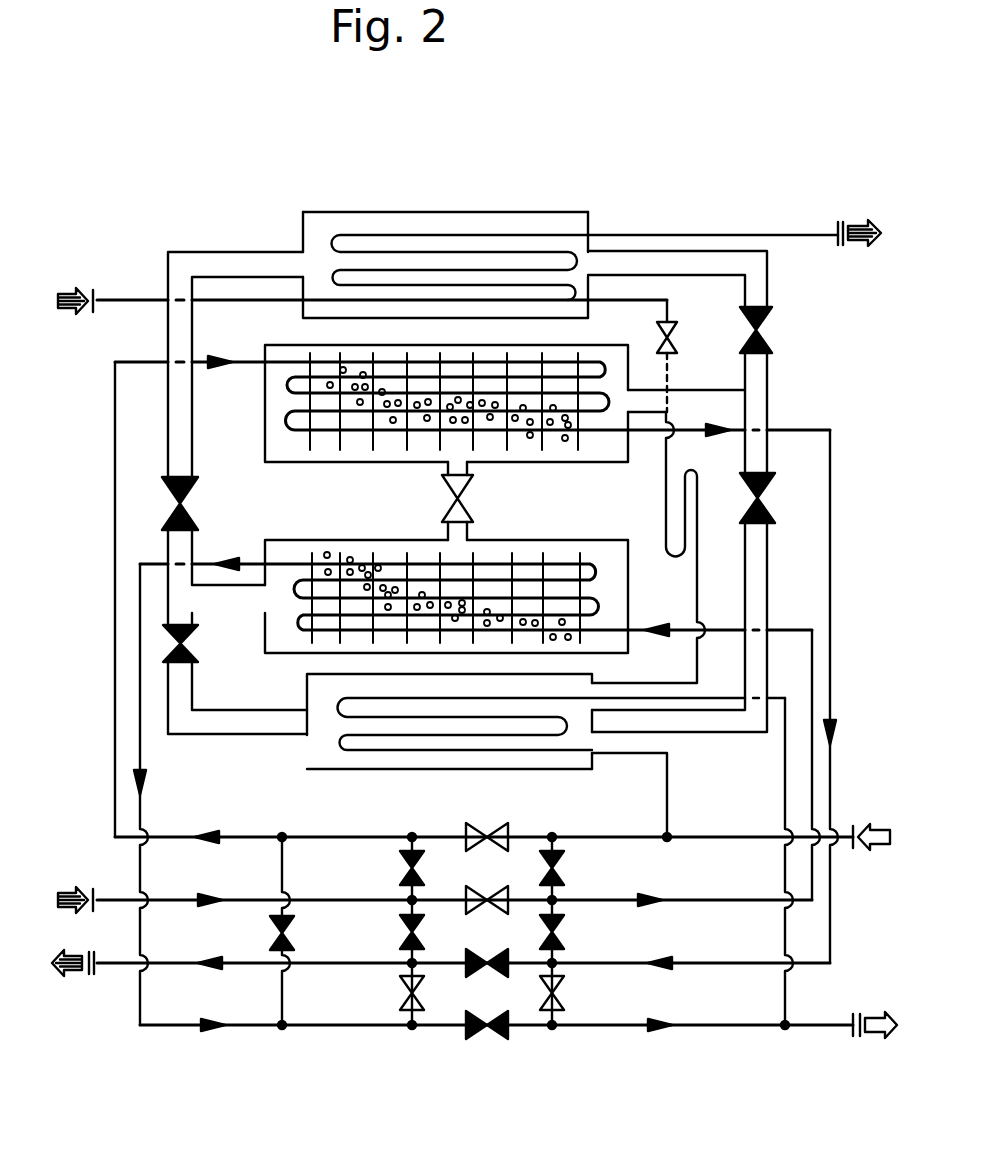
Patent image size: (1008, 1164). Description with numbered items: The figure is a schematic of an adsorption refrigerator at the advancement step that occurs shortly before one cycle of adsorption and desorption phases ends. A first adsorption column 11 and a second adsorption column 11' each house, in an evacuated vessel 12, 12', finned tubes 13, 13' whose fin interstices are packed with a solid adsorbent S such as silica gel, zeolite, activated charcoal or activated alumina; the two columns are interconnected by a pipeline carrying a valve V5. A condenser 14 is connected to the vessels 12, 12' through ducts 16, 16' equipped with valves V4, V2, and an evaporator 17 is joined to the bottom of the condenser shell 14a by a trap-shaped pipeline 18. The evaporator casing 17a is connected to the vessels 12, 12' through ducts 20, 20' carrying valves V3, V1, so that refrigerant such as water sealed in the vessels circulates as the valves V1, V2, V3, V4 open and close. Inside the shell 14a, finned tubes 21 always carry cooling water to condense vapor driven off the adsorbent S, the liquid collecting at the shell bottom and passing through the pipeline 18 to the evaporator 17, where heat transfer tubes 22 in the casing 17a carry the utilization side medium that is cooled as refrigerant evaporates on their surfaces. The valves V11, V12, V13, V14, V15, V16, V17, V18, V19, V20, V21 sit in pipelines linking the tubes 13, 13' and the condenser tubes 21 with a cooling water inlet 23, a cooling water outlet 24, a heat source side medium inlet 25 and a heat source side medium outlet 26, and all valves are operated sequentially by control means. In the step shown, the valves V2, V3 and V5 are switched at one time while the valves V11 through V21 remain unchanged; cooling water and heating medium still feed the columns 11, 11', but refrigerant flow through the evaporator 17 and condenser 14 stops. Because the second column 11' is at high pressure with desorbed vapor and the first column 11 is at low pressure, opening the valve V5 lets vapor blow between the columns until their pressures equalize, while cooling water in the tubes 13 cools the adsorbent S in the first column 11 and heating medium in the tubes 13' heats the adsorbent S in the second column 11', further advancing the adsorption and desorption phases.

The first adsorption column 11 is at (474, 403).
The second adsorption column 11' is at (432, 623).
The evacuated vessel 12 is at (472, 374).
The evacuated vessel 12' is at (476, 556).
The finned tubes 13 is at (479, 380).
The finned tubes 13' is at (461, 561).
The condenser 14 is at (346, 770).
The shell 14a is at (438, 770).
The duct 16 is at (237, 736).
The duct 16' is at (662, 780).
The evaporator 17 is at (505, 212).
The casing 17a is at (352, 212).
The trap-shaped pipeline 18 is at (699, 571).
The duct 20 is at (734, 446).
The duct 20' is at (234, 397).
The finned tubes 21 is at (537, 738).
The heat transfer tubes 22 is at (426, 236).
The cooling water inlet 23 is at (880, 826).
The cooling water outlet 24 is at (873, 1010).
The heat transfer medium inlet 25 is at (68, 890).
The heat transfer medium outlet 26 is at (65, 978).
The solid adsorbent S is at (340, 367).
The valve V1 is at (196, 503).
The valve V2 is at (197, 644).
The valve V3 is at (773, 330).
The valve V4 is at (773, 498).
The valve V5 is at (474, 501).
The valve V11 is at (306, 931).
The valve V12 is at (392, 869).
The valve V13 is at (392, 933).
The valve V14 is at (392, 993).
The valve V15 is at (491, 855).
The valve V16 is at (491, 918).
The valve V17 is at (491, 980).
The valve V18 is at (491, 1043).
The valve V19 is at (576, 869).
The valve V20 is at (576, 933).
The valve V21 is at (576, 993).